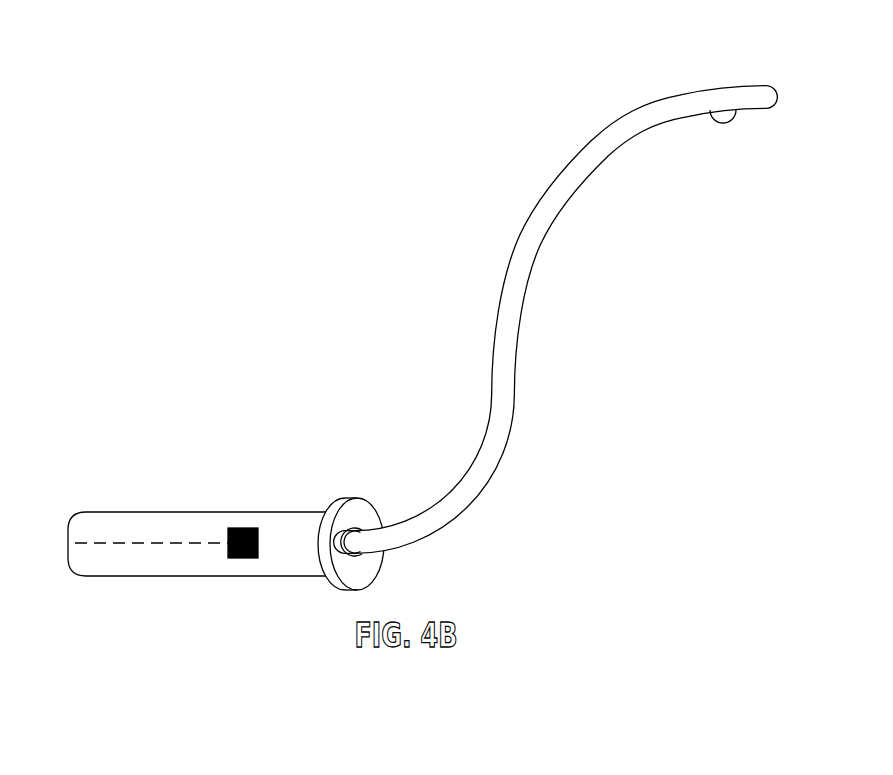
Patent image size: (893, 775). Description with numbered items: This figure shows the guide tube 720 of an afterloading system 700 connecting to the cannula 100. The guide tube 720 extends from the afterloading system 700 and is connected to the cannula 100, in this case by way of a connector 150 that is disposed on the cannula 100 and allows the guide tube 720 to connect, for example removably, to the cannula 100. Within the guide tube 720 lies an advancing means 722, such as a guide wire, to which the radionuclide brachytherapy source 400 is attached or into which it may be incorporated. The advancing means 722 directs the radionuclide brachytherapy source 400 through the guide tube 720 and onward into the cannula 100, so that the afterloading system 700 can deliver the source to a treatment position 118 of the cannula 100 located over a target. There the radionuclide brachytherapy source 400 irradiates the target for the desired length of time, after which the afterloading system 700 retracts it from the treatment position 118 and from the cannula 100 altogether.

The cannula 100 is at (553, 291).
The treatment position 118 is at (710, 104).
The connector 150 is at (352, 515).
The radionuclide brachytherapy source (RBS) 400 is at (245, 528).
The afterloading system 700 is at (179, 574).
The guide tube 720 is at (147, 512).
The advancing means (e.g., guide wire) 722 is at (88, 542).